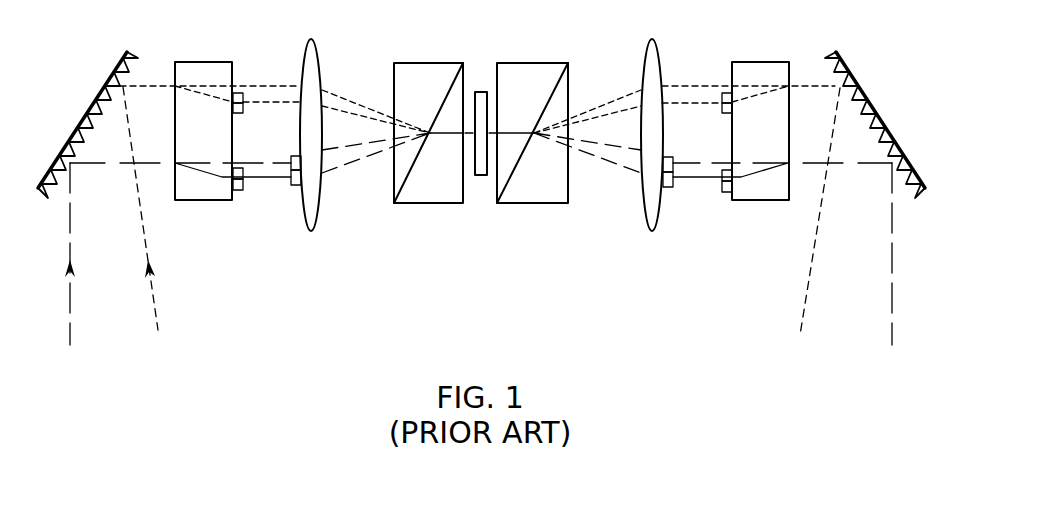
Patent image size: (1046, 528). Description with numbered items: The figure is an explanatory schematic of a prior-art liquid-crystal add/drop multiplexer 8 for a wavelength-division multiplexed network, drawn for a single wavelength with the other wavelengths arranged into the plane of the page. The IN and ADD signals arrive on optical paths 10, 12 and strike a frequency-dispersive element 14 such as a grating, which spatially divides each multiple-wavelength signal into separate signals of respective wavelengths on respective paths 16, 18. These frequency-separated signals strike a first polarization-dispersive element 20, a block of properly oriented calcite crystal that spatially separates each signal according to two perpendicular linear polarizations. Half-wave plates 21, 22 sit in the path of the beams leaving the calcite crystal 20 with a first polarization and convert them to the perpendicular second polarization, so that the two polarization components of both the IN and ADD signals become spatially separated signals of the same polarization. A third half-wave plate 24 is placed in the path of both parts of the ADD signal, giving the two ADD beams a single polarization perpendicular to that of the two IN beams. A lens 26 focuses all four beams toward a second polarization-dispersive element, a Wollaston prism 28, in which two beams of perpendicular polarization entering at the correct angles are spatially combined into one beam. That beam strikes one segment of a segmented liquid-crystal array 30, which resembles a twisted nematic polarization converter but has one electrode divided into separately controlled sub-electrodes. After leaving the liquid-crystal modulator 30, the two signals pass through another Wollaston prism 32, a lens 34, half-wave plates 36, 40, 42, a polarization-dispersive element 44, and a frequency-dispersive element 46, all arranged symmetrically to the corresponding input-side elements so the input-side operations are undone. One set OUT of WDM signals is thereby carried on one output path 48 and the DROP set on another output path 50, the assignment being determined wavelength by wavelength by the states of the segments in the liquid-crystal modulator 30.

The liquid-crystal add/drop multiplexer 8 is at (482, 190).
The optical path 10 is at (70, 222).
The optical path 12 is at (143, 228).
The frequency-dispersive element 14 is at (126, 54).
The path 16 is at (152, 86).
The path 18 is at (148, 165).
The first polarization-dispersive element 20 is at (207, 202).
The half-wave plate 21 is at (237, 192).
The half-wave plate 22 is at (238, 92).
The third half-wave plate 24 is at (296, 187).
The lens 26 is at (318, 205).
The Wollaston prism 28 is at (432, 204).
The segmented liquid-crystal array 30 is at (480, 177).
The Wollaston prism 32 is at (537, 204).
The lens 34 is at (656, 62).
The half-wave plate 36 is at (674, 187).
The half-wave plate 40 is at (724, 96).
The half-wave plate 42 is at (727, 194).
The polarization-dispersive element 44 is at (762, 202).
The frequency-dispersive element 46 is at (838, 55).
The output path 48 is at (818, 232).
The output path 50 is at (893, 222).